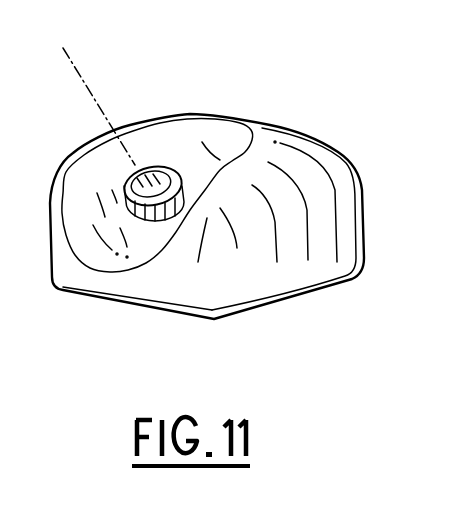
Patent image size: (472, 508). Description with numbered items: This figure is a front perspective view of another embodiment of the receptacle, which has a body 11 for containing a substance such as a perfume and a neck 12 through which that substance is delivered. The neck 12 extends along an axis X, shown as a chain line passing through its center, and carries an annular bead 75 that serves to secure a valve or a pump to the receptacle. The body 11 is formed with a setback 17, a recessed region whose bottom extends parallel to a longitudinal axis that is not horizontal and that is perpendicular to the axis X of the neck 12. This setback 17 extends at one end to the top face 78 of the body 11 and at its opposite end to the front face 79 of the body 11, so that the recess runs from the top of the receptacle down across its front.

The body 11 is at (268, 280).
The neck 12 is at (148, 224).
The setback 17 is at (84, 199).
The annular bead 75 is at (182, 170).
The top face 78 is at (266, 152).
The front face 79 is at (178, 280).
The axis of the neck X is at (74, 64).